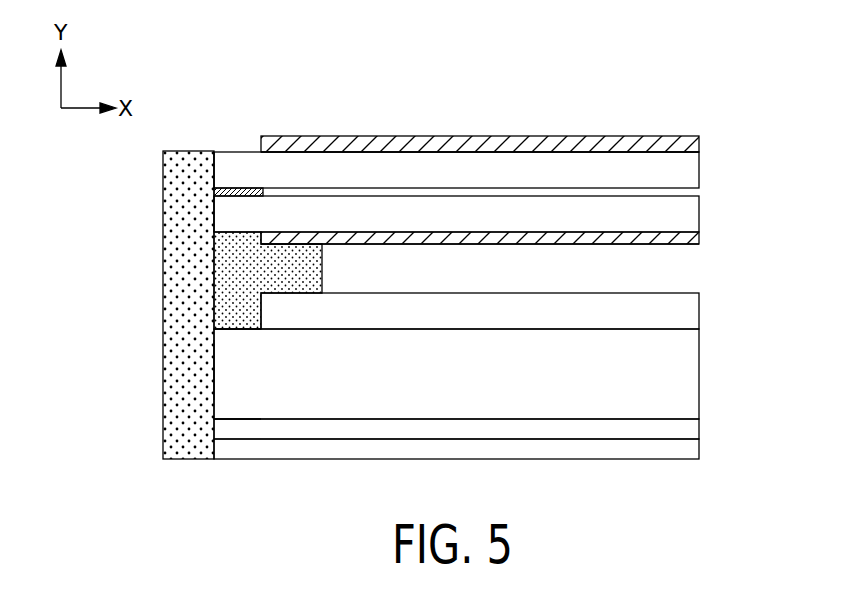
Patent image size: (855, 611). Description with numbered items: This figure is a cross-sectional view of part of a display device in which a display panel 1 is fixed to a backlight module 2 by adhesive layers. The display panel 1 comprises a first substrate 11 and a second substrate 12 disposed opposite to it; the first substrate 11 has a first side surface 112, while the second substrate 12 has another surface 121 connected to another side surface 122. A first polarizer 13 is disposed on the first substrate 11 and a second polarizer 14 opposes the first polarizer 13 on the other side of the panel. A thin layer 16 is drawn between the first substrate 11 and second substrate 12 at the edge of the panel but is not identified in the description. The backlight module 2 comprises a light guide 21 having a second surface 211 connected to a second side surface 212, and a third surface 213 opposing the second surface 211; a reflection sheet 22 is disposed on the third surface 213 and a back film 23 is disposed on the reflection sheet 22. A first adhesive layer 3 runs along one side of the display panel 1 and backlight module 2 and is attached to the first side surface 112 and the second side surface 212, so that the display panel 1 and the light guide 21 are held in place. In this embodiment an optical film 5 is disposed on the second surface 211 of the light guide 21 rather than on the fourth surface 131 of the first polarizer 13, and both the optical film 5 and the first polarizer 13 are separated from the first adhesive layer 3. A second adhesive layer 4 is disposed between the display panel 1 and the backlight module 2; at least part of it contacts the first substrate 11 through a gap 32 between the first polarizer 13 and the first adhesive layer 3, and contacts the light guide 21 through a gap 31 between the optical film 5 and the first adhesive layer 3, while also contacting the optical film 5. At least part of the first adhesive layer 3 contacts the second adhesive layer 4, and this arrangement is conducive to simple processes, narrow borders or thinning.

The display panel 1 is at (439, 181).
The backlight module 2 is at (439, 392).
The first adhesive layer 3 is at (168, 158).
The second adhesive layer 4 is at (318, 269).
The optical film 5 is at (690, 316).
The first substrate 11 is at (690, 211).
The second substrate 12 is at (690, 171).
The first polarizer 13 is at (690, 239).
The second polarizer 14 is at (690, 147).
The sealant 16 is at (214, 192).
The light guide 21 is at (690, 378).
The reflection sheet 22 is at (690, 426).
The back film 23 is at (479, 453).
The gap 31 is at (232, 312).
The gap 32 is at (232, 262).
The first side surface 112 is at (214, 218).
The another surface 121 is at (510, 152).
The another side surface 122 is at (215, 171).
The fourth surface 131 is at (546, 244).
The second surface 211 is at (232, 328).
The second side surface 212 is at (214, 372).
The third surface 213 is at (228, 420).